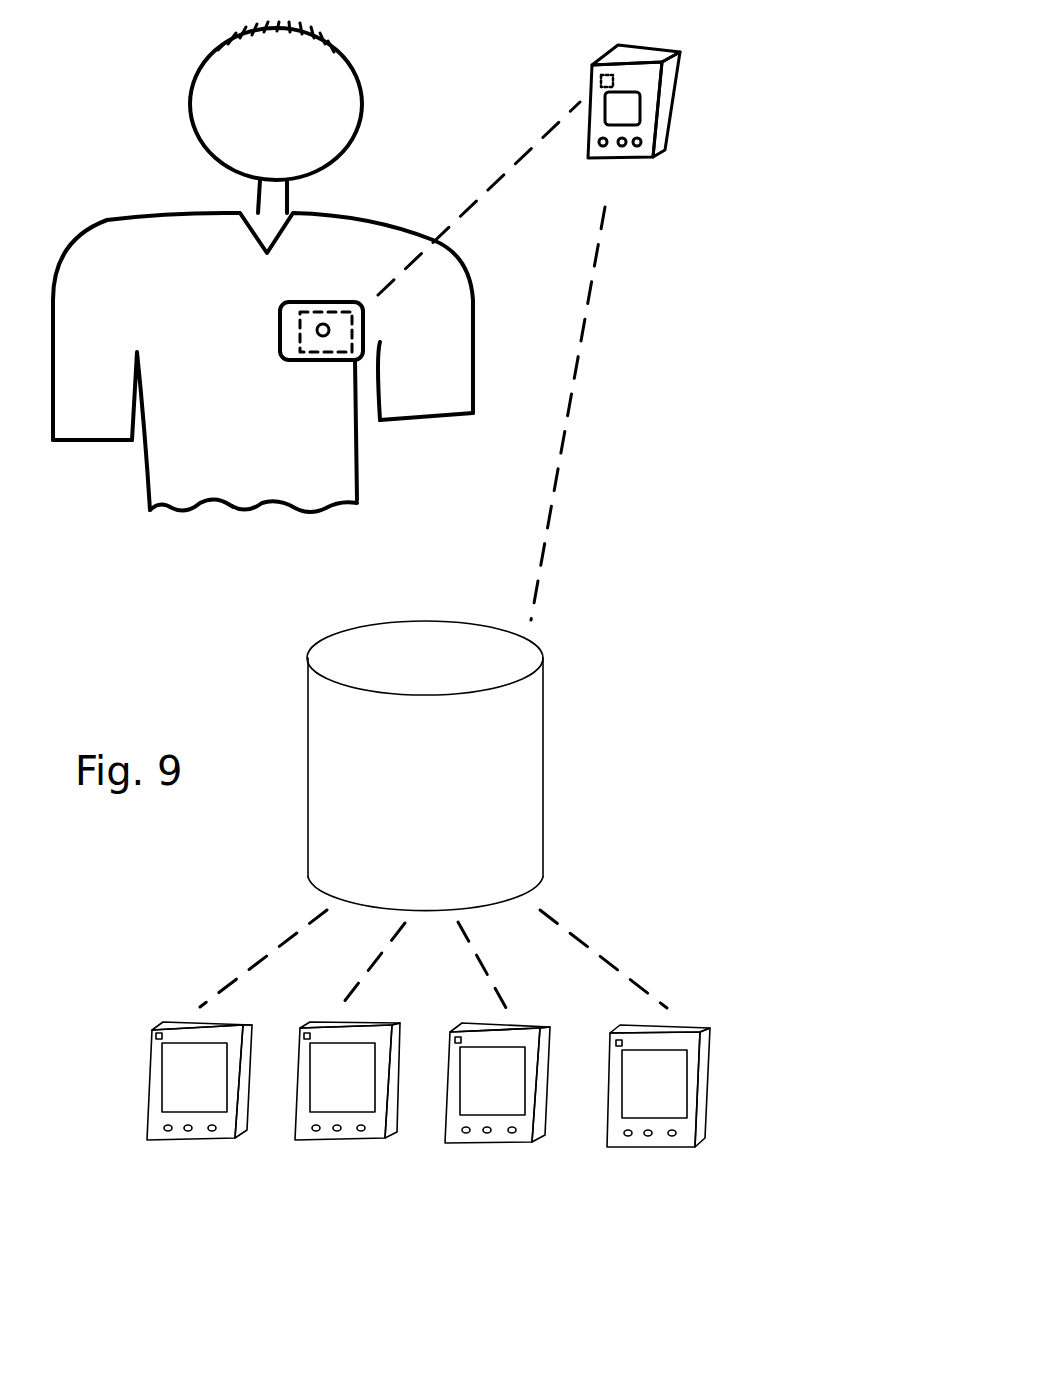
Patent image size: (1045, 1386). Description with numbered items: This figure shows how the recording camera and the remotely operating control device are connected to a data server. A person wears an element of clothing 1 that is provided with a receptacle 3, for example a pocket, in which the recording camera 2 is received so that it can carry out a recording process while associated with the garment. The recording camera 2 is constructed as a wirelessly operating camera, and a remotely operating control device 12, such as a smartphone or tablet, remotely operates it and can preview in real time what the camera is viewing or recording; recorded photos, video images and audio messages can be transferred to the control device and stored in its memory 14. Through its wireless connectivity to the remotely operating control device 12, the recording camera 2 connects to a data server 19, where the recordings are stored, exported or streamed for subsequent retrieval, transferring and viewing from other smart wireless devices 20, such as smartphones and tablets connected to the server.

The element of clothing 1 is at (178, 280).
The recording camera 2 is at (347, 333).
The receptacle 3 is at (357, 300).
The remotely operating control device 12 is at (695, 106).
The memory 14 is at (592, 70).
The data server 19 is at (548, 770).
The other smart wireless devices 20 is at (190, 1158).